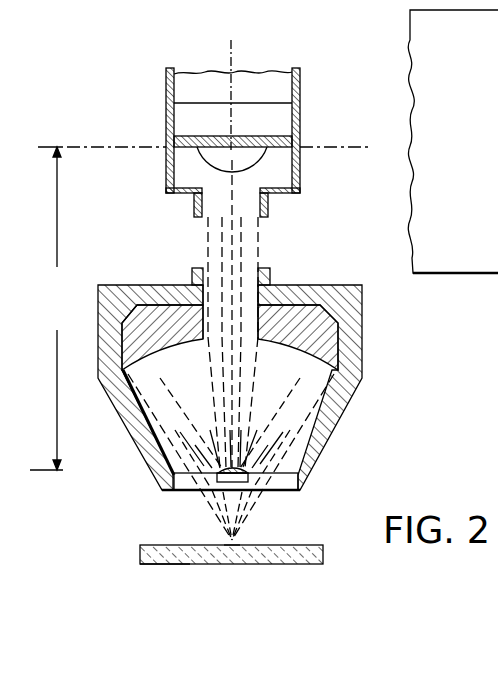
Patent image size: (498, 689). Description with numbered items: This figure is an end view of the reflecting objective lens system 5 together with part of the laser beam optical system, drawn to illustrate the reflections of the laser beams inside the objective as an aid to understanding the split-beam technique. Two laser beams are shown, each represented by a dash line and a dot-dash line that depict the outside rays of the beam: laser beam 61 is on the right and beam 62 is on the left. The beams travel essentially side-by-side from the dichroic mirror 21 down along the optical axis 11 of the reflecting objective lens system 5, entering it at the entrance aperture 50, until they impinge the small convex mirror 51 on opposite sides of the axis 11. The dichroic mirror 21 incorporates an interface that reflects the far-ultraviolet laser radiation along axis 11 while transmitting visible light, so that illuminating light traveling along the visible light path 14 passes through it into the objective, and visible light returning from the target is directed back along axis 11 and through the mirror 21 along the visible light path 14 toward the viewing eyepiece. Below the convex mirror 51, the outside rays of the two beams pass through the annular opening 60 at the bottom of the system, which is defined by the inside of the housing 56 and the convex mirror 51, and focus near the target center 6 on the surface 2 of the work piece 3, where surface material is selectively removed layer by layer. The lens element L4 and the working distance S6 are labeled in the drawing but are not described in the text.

The surface 2 is at (277, 546).
The work piece 3 is at (140, 565).
The reflecting objective lens system 5 is at (123, 443).
The target center 6 is at (230, 542).
The optical axis 11 is at (232, 262).
The visible light path 14 is at (230, 90).
The dichroic mirror 21 is at (258, 125).
The lens L4 is at (197, 160).
The entrance aperture 50 is at (207, 258).
The convex mirror 51 is at (246, 470).
The housing 56 is at (300, 482).
The annular opening 60 is at (279, 494).
The laser beam 61 is at (258, 230).
The laser beam 62 is at (206, 232).
The working distance S6 is at (50, 308).